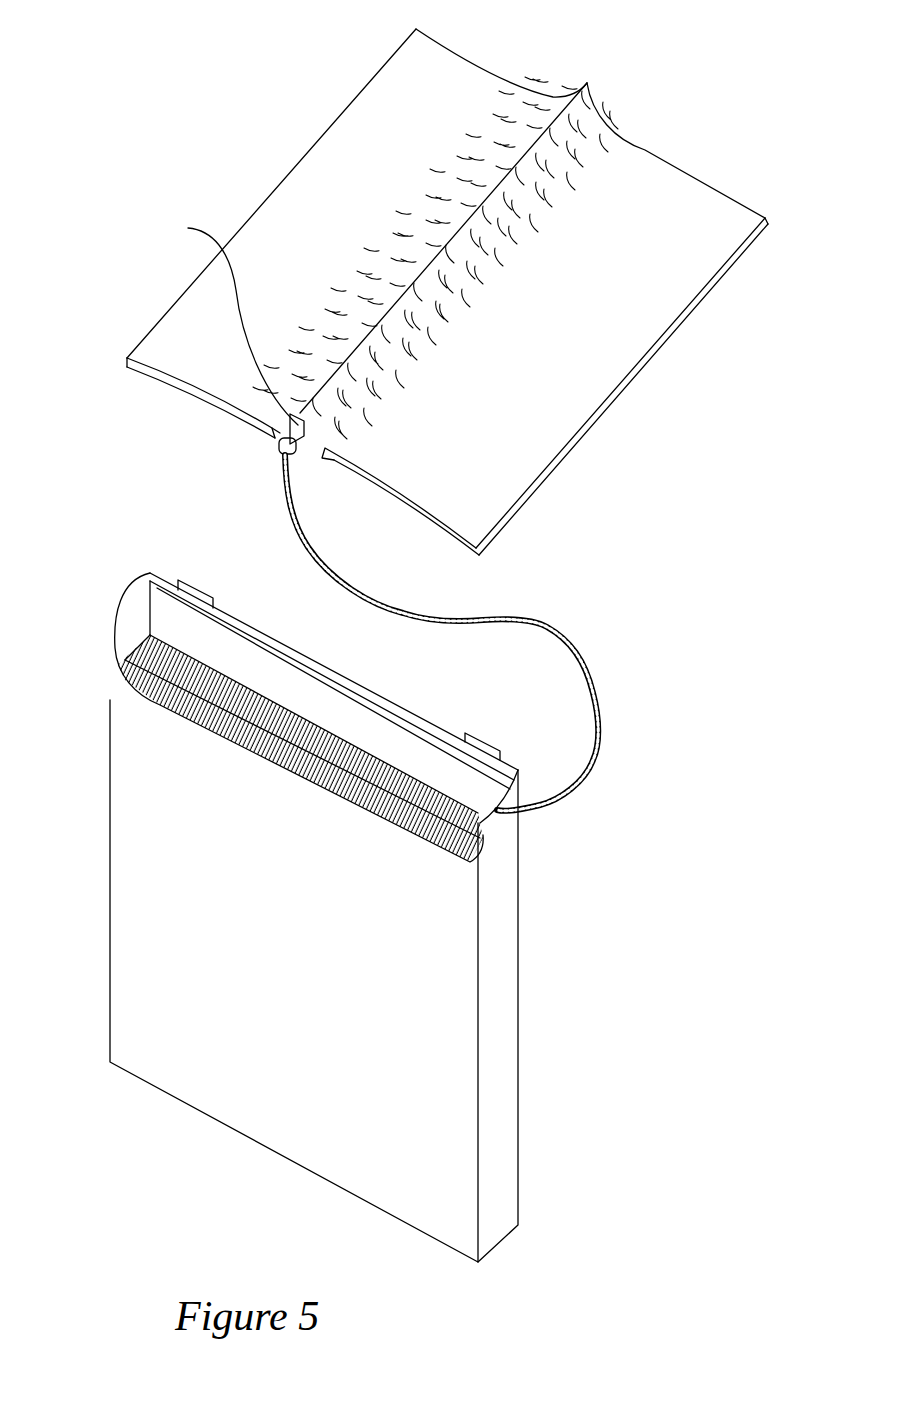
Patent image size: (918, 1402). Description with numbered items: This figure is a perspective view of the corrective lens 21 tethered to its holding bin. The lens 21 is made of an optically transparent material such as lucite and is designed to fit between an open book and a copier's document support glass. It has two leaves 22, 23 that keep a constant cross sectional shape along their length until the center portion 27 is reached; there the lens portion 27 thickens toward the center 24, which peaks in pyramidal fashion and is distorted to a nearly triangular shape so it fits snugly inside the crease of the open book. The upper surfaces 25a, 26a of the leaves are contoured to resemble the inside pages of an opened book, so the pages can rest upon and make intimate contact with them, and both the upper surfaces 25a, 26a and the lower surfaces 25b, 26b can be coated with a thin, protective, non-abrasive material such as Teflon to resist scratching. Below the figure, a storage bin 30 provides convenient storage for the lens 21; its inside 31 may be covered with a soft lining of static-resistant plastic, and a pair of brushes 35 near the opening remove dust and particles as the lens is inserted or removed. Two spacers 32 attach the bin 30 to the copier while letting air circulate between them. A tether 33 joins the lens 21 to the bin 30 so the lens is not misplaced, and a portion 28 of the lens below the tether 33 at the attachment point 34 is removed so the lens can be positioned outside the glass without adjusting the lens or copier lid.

The corrective lens 21 is at (503, 360).
The leaf 22 is at (472, 80).
The leaf 23 is at (635, 165).
The center 24 is at (467, 213).
The upper surface 25a is at (342, 286).
The lower surface 25b is at (165, 393).
The upper surface 26a is at (477, 445).
The lower surface 26b is at (427, 534).
The center portion 27 is at (495, 237).
The removed portion 28 is at (312, 453).
The storage bin 30 is at (280, 1047).
The bin inside surface 31 is at (317, 708).
The spacers 32 is at (207, 580).
The tether 33 is at (597, 690).
The attachment point 34 is at (221, 320).
The brushes 35 is at (193, 696).